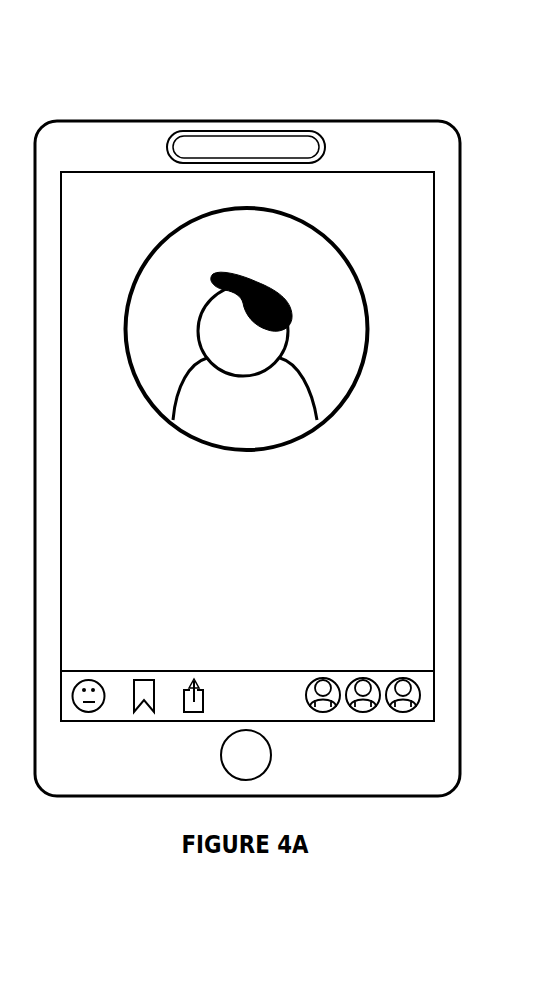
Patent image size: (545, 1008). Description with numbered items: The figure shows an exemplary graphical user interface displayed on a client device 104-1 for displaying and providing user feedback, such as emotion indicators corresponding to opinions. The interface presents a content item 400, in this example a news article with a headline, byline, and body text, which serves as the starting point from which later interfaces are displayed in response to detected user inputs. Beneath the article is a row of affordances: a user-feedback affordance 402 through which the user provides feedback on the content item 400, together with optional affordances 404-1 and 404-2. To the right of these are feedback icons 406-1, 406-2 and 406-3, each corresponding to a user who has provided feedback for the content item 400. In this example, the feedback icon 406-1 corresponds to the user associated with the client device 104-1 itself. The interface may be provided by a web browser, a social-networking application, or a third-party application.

The client device 104-1 is at (250, 121).
The content item 400 is at (434, 187).
The user-feedback affordance 402 is at (82, 712).
The optional affordance 404-1 is at (132, 712).
The optional affordance 404-2 is at (188, 712).
The feedback icon 406-1 is at (323, 712).
The feedback icon 406-2 is at (355, 712).
The feedback icon 406-3 is at (393, 712).